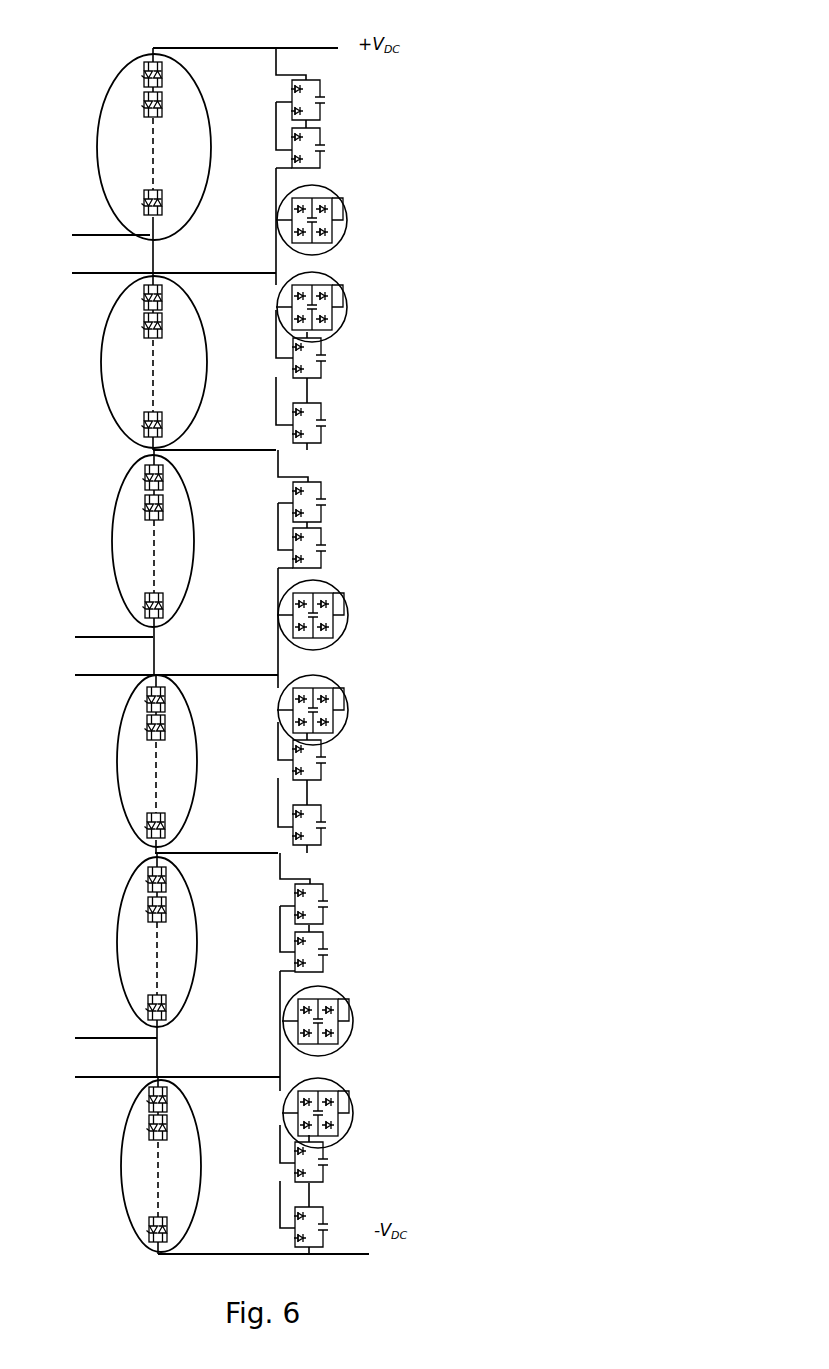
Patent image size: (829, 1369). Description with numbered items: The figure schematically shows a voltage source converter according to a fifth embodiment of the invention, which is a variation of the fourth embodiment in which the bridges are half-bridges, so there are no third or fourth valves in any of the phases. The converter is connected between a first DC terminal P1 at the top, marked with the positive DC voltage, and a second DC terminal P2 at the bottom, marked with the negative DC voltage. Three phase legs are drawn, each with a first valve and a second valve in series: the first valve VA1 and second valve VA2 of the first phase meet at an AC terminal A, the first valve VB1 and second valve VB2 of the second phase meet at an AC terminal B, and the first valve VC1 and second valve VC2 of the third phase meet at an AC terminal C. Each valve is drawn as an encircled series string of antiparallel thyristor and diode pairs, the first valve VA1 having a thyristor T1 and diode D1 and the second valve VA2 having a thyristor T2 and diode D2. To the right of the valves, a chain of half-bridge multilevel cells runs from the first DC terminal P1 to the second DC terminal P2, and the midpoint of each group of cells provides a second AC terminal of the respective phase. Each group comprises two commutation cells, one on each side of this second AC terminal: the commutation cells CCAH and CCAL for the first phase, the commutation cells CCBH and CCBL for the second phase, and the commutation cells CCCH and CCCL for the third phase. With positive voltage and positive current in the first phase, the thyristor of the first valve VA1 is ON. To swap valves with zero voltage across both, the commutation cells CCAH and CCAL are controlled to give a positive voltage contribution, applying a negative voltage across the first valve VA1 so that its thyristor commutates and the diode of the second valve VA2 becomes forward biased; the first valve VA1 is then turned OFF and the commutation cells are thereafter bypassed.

The first DC terminal P1 is at (246, 34).
The second DC terminal P2 is at (263, 1269).
The AC terminal of first phase A is at (174, 254).
The AC terminal of second phase B is at (176, 656).
The AC terminal of third phase C is at (177, 1057).
The first valve VA1 is at (100, 117).
The second valve VA2 is at (107, 330).
The first valve VB1 is at (115, 510).
The second valve VB2 is at (120, 717).
The first valve VC1 is at (123, 893).
The second valve VC2 is at (125, 1123).
The commutation cell CCAH is at (347, 228).
The commutation cell CCAL is at (347, 317).
The commutation cell CCBH is at (347, 622).
The commutation cell CCBL is at (347, 722).
The commutation cell CCCH is at (355, 1030).
The commutation cell CCCL is at (355, 1122).
The thyristor of valve VA1 T1 is at (136, 74).
The diode of valve VA1 D1 is at (168, 74).
The thyristor of valve VA2 T2 is at (136, 297).
The diode of valve VA2 D2 is at (170, 297).